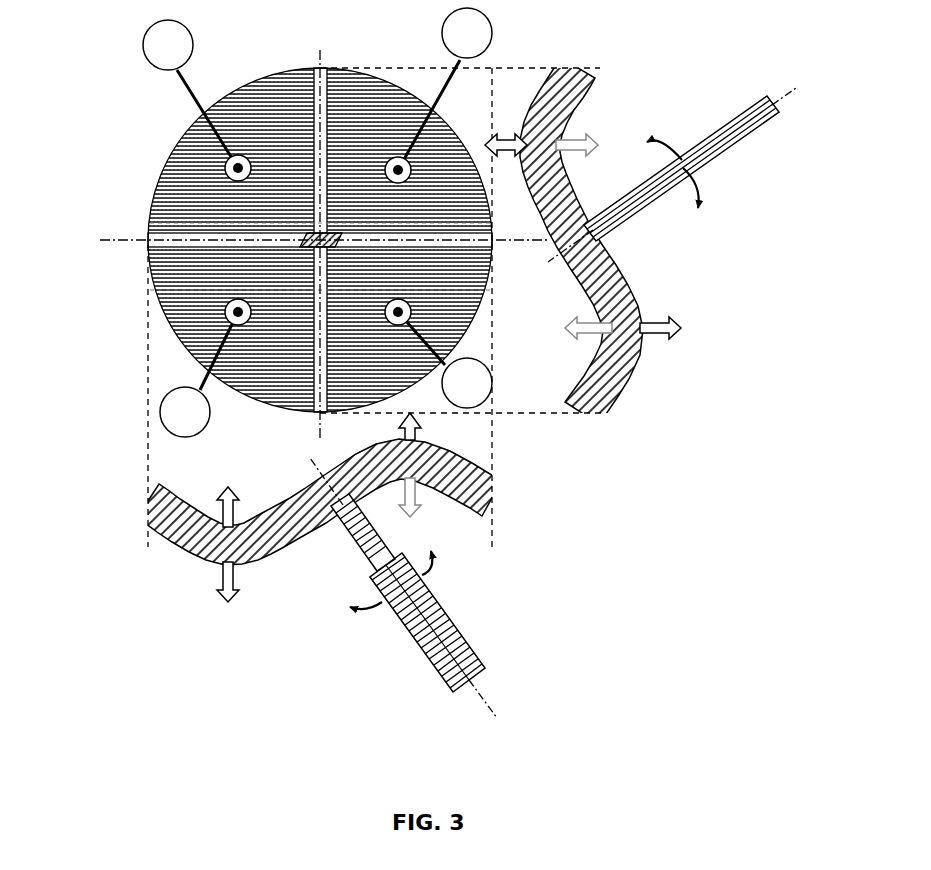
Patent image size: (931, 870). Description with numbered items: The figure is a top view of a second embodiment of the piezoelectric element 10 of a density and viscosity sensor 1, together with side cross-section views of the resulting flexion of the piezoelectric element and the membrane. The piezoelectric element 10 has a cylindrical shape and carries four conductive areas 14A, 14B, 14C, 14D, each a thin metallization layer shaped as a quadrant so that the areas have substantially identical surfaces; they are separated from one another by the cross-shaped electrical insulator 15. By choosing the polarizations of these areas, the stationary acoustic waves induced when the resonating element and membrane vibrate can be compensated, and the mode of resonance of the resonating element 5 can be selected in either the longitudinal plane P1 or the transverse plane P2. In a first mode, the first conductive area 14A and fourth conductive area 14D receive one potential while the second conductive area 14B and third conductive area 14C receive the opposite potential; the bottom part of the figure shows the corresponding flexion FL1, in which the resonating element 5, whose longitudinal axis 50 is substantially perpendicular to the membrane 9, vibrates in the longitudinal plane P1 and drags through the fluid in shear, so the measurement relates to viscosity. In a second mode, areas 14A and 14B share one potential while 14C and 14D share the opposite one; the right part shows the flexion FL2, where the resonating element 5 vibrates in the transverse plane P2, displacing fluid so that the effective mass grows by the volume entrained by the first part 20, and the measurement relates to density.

The density and viscosity sensor 1 is at (100, 74).
The piezoelectric element 10 is at (289, 348).
The electrical insulator 15 is at (148, 243).
The first part 20 is at (143, 223).
The first conductive area 14A is at (300, 207).
The second conductive area 14B is at (376, 207).
The third conductive area 14C is at (376, 284).
The fourth conductive area 14D is at (300, 284).
The resonating element 5 is at (627, 229).
The membrane 9 is at (622, 378).
The longitudinal axis 50 is at (780, 94).
The longitudinal plane P1 is at (100, 240).
The transverse plane P2 is at (320, 50).
The flexion FL1 is at (144, 488).
The flexion FL2 is at (599, 440).